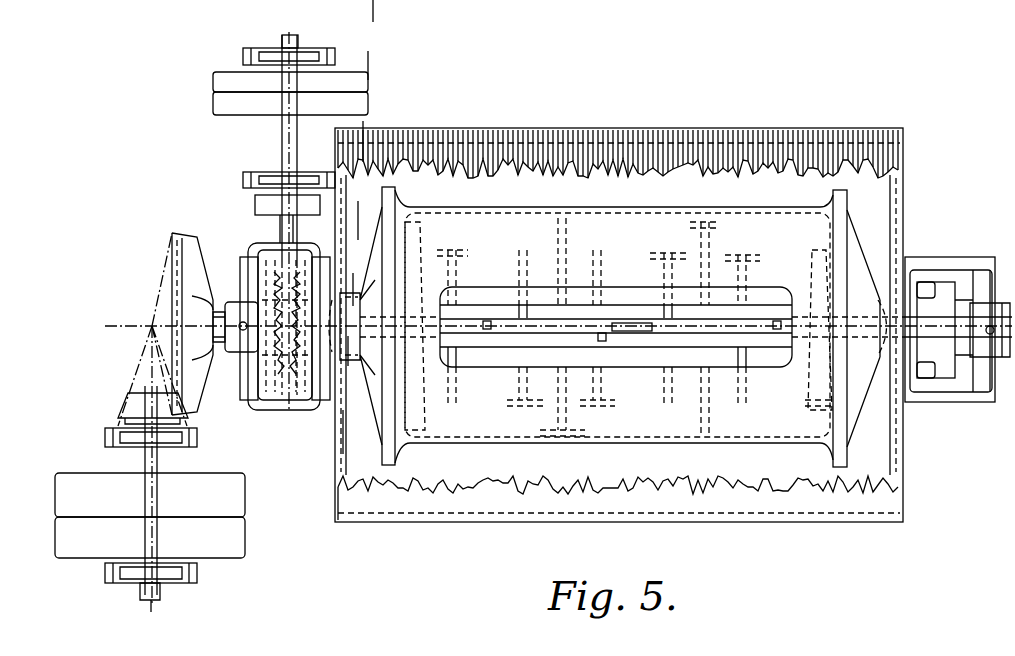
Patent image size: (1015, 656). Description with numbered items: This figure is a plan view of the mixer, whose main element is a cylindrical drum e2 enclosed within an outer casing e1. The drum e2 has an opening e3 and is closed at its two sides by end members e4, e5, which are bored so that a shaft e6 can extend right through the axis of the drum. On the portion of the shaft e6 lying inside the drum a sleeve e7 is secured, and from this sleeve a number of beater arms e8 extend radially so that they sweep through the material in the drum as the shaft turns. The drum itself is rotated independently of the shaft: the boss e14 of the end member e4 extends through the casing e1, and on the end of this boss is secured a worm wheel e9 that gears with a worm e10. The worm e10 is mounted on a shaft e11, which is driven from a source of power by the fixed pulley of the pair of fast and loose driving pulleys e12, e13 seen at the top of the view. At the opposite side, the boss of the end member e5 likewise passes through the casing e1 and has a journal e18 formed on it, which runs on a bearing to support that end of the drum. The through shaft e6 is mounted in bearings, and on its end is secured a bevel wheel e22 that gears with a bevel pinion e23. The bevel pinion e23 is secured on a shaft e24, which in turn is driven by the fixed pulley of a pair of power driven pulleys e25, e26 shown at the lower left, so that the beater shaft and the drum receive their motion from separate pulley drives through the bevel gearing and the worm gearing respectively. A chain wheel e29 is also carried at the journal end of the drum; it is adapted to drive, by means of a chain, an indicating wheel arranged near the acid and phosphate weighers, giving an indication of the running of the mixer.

The outer casing e1 is at (533, 135).
The cylindrical drum e2 is at (507, 214).
The opening e3 is at (500, 286).
The end member e4 is at (385, 215).
The end member e5 is at (846, 206).
The shaft e6 is at (218, 340).
The sleeve e7 is at (606, 312).
The beater arms e8 is at (663, 352).
The worm wheel e9 is at (287, 390).
The worm e10 is at (250, 297).
The shaft e11 is at (285, 231).
The driving pulley e12 is at (221, 101).
The driving pulley e13 is at (215, 84).
The boss e14 is at (361, 352).
The journal e18 is at (928, 370).
The bevel wheel e22 is at (180, 244).
The bevel pinion e23 is at (130, 395).
The shaft e24 is at (149, 452).
The power driven pulley e25 is at (60, 536).
The power driven pulley e26 is at (60, 493).
The chain wheel e29 is at (932, 284).